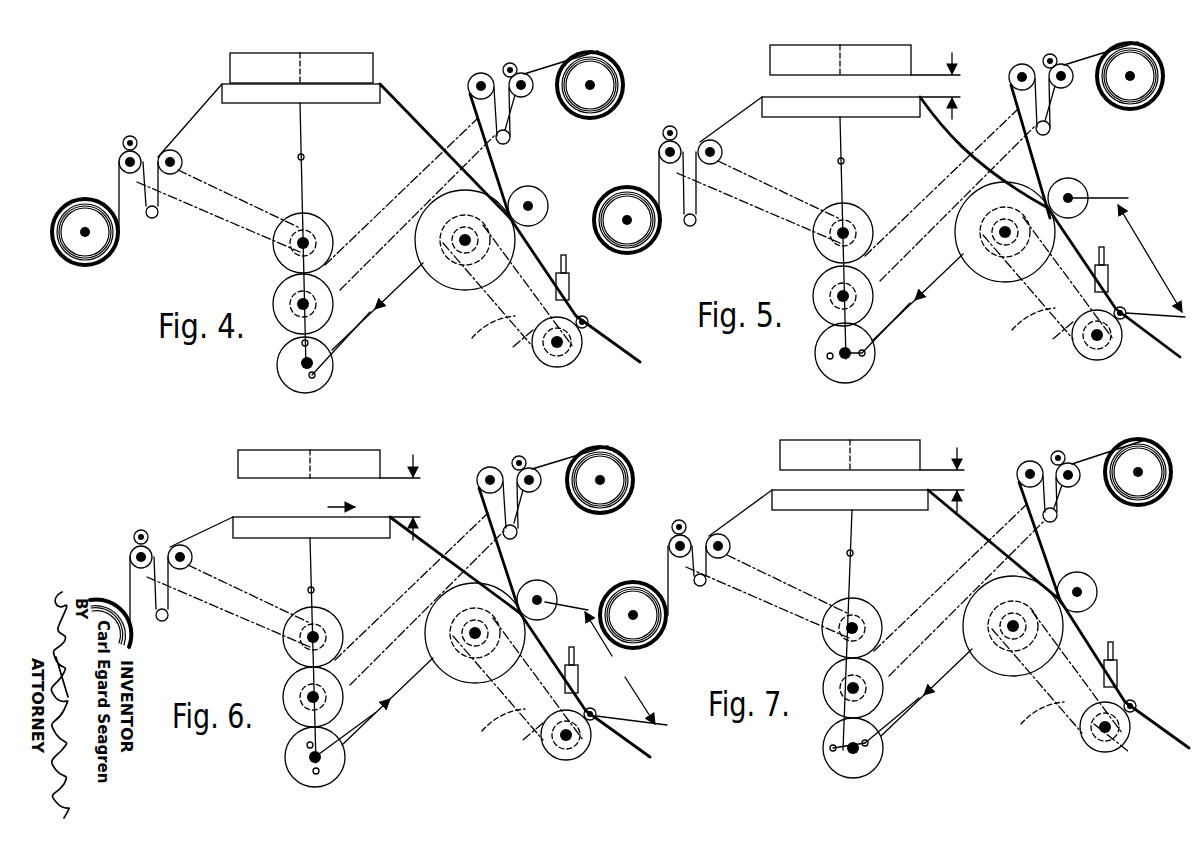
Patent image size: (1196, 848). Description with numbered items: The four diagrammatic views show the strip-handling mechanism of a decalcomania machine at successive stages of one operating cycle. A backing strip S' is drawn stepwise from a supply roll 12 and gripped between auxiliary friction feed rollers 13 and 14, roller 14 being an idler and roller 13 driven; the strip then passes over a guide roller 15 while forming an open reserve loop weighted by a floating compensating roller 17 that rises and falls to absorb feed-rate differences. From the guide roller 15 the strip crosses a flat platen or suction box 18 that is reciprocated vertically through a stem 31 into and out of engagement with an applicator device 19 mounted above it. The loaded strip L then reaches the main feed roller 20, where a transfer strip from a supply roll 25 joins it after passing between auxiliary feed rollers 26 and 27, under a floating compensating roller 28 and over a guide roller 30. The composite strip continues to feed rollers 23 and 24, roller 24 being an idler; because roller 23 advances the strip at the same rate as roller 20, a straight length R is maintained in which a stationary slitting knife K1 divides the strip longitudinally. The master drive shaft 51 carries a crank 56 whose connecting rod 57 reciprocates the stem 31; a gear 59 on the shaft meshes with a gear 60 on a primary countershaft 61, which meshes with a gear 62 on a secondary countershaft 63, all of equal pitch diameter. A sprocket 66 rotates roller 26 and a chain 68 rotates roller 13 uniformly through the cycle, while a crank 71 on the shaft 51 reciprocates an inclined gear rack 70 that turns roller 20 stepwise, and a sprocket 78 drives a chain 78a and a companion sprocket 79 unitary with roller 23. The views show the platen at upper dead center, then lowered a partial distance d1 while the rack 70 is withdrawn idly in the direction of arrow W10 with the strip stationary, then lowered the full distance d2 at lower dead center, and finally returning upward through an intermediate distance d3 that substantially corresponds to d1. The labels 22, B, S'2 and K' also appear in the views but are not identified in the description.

In FIG. 4, the supply roll 12 is at (78, 202).
In FIG. 5, the supply roll 12 is at (627, 199).
In FIG. 6, the supply roll 12 is at (104, 599).
In FIG. 7, the supply roll 12 is at (633, 595).
In FIG. 4, the auxiliary friction feed roller 13 is at (128, 172).
In FIG. 5, the auxiliary friction feed roller 13 is at (676, 171).
In FIG. 6, the auxiliary friction feed roller 13 is at (140, 571).
In FIG. 7, the auxiliary friction feed roller 13 is at (682, 563).
In FIG. 4, the auxiliary friction feed roller 14 is at (133, 135).
In FIG. 5, the auxiliary friction feed roller 14 is at (677, 116).
In FIG. 6, the auxiliary friction feed roller 14 is at (148, 517).
In FIG. 7, the auxiliary friction feed roller 14 is at (686, 510).
In FIG. 4, the guide roller 15 is at (183, 160).
In FIG. 5, the guide roller 15 is at (729, 151).
In FIG. 6, the guide roller 15 is at (199, 556).
In FIG. 7, the guide roller 15 is at (738, 545).
In FIG. 4, the floating compensating roller 17 is at (152, 218).
In FIG. 5, the floating compensating roller 17 is at (688, 231).
In FIG. 6, the floating compensating roller 17 is at (160, 628).
In FIG. 7, the floating compensating roller 17 is at (706, 594).
In FIG. 4, the platen 18 is at (276, 106).
In FIG. 5, the platen 18 is at (841, 129).
In FIG. 6, the platen 18 is at (311, 544).
In FIG. 7, the platen 18 is at (850, 520).
In FIG. 4, the applicator device 19 is at (224, 68).
In FIG. 5, the applicator device 19 is at (807, 56).
In FIG. 6, the applicator device 19 is at (276, 460).
In FIG. 7, the applicator device 19 is at (819, 450).
In FIG. 4, the main feed friction roller 20 is at (470, 292).
In FIG. 5, the main feed friction roller 20 is at (1005, 255).
In FIG. 6, the main feed friction roller 20 is at (475, 655).
In FIG. 7, the main feed friction roller 20 is at (1013, 652).
In FIG. 4, the guide roller 22 is at (534, 201).
In FIG. 5, the guide roller 22 is at (1084, 193).
In FIG. 6, the guide roller 22 is at (549, 587).
In FIG. 7, the guide roller 22 is at (1094, 587).
In FIG. 4, the friction feed roller 23 is at (577, 362).
In FIG. 5, the friction feed roller 23 is at (1112, 348).
In FIG. 6, the friction feed roller 23 is at (580, 747).
In FIG. 7, the friction feed roller 23 is at (1093, 735).
In FIG. 4, the friction feed roller 24 is at (589, 321).
In FIG. 5, the friction feed roller 24 is at (1142, 307).
In FIG. 6, the friction feed roller 24 is at (610, 711).
In FIG. 7, the friction feed roller 24 is at (1150, 697).
In FIG. 4, the supply roll 25 is at (590, 121).
In FIG. 5, the supply roll 25 is at (1113, 92).
In FIG. 6, the supply roll 25 is at (582, 495).
In FIG. 7, the supply roll 25 is at (1121, 492).
In FIG. 4, the auxiliary feed friction roller 26 is at (524, 97).
In FIG. 5, the auxiliary feed friction roller 26 is at (1067, 95).
In FIG. 6, the auxiliary feed friction roller 26 is at (538, 498).
In FIG. 7, the auxiliary feed friction roller 26 is at (1076, 490).
In FIG. 4, the auxiliary feed friction roller 27 is at (512, 62).
In FIG. 5, the auxiliary feed friction roller 27 is at (1059, 40).
In FIG. 6, the auxiliary feed friction roller 27 is at (531, 443).
In FIG. 7, the auxiliary feed friction roller 27 is at (1067, 438).
In FIG. 4, the floating compensating roller 28 is at (508, 142).
In FIG. 5, the floating compensating roller 28 is at (1058, 141).
In FIG. 6, the floating compensating roller 28 is at (527, 546).
In FIG. 7, the floating compensating roller 28 is at (1065, 526).
In FIG. 4, the guide roller 30 is at (476, 75).
In FIG. 5, the guide roller 30 is at (1015, 127).
In FIG. 6, the guide roller 30 is at (488, 522).
In FIG. 7, the guide roller 30 is at (1027, 518).
In FIG. 4, the stem 31 is at (303, 139).
In FIG. 5, the stem 31 is at (862, 238).
In FIG. 6, the stem 31 is at (333, 650).
In FIG. 7, the stem 31 is at (869, 630).
In FIG. 5, the master drive shaft 51 is at (846, 390).
In FIG. 6, the master drive shaft 51 is at (345, 759).
In FIG. 7, the master drive shaft 51 is at (836, 780).
In FIG. 4, the crank 56 is at (300, 364).
In FIG. 5, the crank 56 is at (862, 353).
In FIG. 6, the crank 56 is at (314, 768).
In FIG. 7, the crank 56 is at (867, 734).
In FIG. 4, the connecting rod 57 is at (303, 197).
In FIG. 5, the connecting rod 57 is at (865, 174).
In FIG. 6, the connecting rod 57 is at (335, 598).
In FIG. 7, the connecting rod 57 is at (870, 569).
In FIG. 4, the gear 59 is at (281, 381).
In FIG. 5, the gear 59 is at (814, 374).
In FIG. 6, the gear 59 is at (283, 770).
In FIG. 7, the gear 59 is at (829, 763).
In FIG. 4, the gear 60 is at (281, 323).
In FIG. 5, the gear 60 is at (804, 336).
In FIG. 6, the gear 60 is at (274, 734).
In FIG. 7, the gear 60 is at (813, 731).
In FIG. 4, the primary countershaft 61 is at (292, 304).
In FIG. 5, the primary countershaft 61 is at (830, 296).
In FIG. 6, the primary countershaft 61 is at (296, 697).
In FIG. 7, the primary countershaft 61 is at (865, 681).
In FIG. 4, the gear 62 is at (280, 257).
In FIG. 5, the gear 62 is at (798, 249).
In FIG. 6, the gear 62 is at (268, 662).
In FIG. 7, the gear 62 is at (807, 653).
In FIG. 4, the secondary countershaft 63 is at (316, 231).
In FIG. 5, the secondary countershaft 63 is at (829, 233).
In FIG. 6, the secondary countershaft 63 is at (323, 637).
In FIG. 7, the secondary countershaft 63 is at (867, 628).
In FIG. 4, the companion sprocket 66 is at (397, 192).
In FIG. 5, the companion sprocket 66 is at (950, 195).
In FIG. 6, the companion sprocket 66 is at (420, 599).
In FIG. 7, the companion sprocket 66 is at (959, 590).
In FIG. 4, the chain 68 is at (235, 193).
In FIG. 5, the chain 68 is at (758, 201).
In FIG. 6, the chain 68 is at (228, 606).
In FIG. 7, the chain 68 is at (767, 595).
In FIG. 4, the gear rack 70 is at (368, 318).
In FIG. 5, the gear rack 70 is at (917, 297).
In FIG. 6, the gear rack 70 is at (387, 701).
In FIG. 7, the gear rack 70 is at (926, 694).
In FIG. 4, the crank 71 is at (312, 380).
In FIG. 5, the crank 71 is at (858, 360).
In FIG. 6, the crank 71 is at (314, 743).
In FIG. 7, the crank 71 is at (892, 735).
In FIG. 4, the sprocket 78 is at (456, 290).
In FIG. 5, the sprocket 78 is at (1030, 278).
In FIG. 6, the sprocket 78 is at (501, 679).
In FIG. 7, the sprocket 78 is at (1042, 672).
In FIG. 4, the chain 78a is at (507, 322).
In FIG. 5, the chain 78a is at (1029, 332).
In FIG. 6, the chain 78a is at (496, 733).
In FIG. 7, the chain 78a is at (1033, 726).
In FIG. 4, the companion sprocket 79 is at (530, 345).
In FIG. 5, the companion sprocket 79 is at (1057, 349).
In FIG. 6, the companion sprocket 79 is at (527, 752).
In FIG. 7, the companion sprocket 79 is at (1120, 747).
In FIG. 4, the web portion B is at (190, 118).
In FIG. 5, the web portion B is at (733, 119).
In FIG. 6, the web portion B is at (201, 521).
In FIG. 7, the web portion B is at (740, 504).
In FIG. 4, the loaded strip L is at (408, 110).
In FIG. 5, the loaded strip L is at (1045, 227).
In FIG. 6, the loaded strip L is at (519, 637).
In FIG. 7, the loaded strip L is at (1058, 619).
In FIG. 4, the backing strip S' is at (154, 197).
In FIG. 5, the backing strip S' is at (693, 145).
In FIG. 6, the backing strip S' is at (167, 594).
In FIG. 7, the slack loop S'2 is at (705, 586).
In FIG. 4, the slitting knife K1 is at (572, 288).
In FIG. 6, the slitting knife K1 is at (590, 670).
In FIG. 7, the slitting knife K1 is at (1132, 664).
In FIG. 5, the knife K' is at (1121, 269).
In FIG. 5, the straight length R is at (1129, 257).
In FIG. 6, the straight length R is at (606, 663).
In FIG. 5, the arrow W10 is at (935, 257).
In FIG. 5, the distance d1 is at (944, 86).
In FIG. 6, the distance d2 is at (384, 497).
In FIG. 7, the distance d3 is at (952, 480).